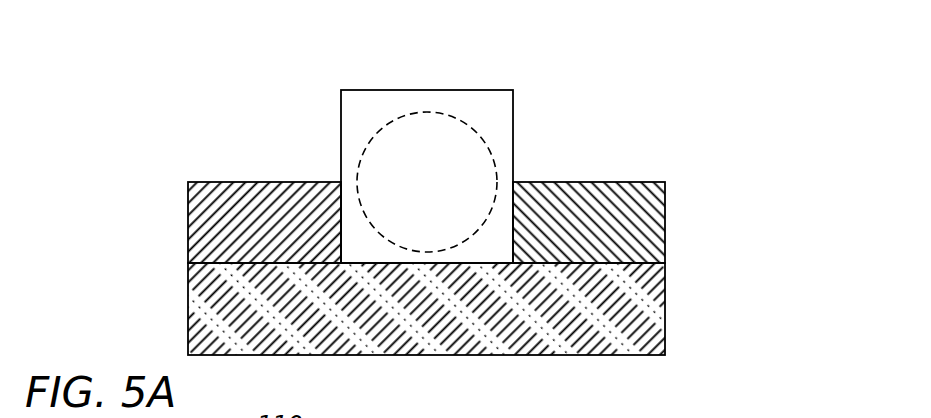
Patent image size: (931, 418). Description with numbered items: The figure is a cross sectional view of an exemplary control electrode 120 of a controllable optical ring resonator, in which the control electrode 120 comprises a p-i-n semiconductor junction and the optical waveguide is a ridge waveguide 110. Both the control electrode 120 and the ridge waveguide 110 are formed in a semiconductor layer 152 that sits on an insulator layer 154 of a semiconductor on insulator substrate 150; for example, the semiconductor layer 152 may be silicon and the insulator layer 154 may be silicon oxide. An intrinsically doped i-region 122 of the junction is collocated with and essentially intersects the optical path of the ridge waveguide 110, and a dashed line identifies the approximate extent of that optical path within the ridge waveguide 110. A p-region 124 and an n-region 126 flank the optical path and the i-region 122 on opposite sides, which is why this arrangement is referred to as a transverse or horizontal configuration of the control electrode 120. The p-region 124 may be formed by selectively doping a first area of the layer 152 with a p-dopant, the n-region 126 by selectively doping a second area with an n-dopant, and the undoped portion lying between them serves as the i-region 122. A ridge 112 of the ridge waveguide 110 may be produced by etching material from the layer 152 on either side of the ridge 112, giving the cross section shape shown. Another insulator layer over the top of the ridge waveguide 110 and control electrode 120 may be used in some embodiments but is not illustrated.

The ridge waveguide 110 is at (263, 140).
The ridge 112 is at (411, 68).
The control electrode 120 is at (644, 145).
The i-region 122 is at (465, 146).
The p-region 124 is at (262, 182).
The n-region 126 is at (589, 182).
The semiconductor on insulator (SOI) substrate 150 is at (431, 186).
The semiconductor layer 152 is at (482, 140).
The insulator layer 154 is at (697, 265).